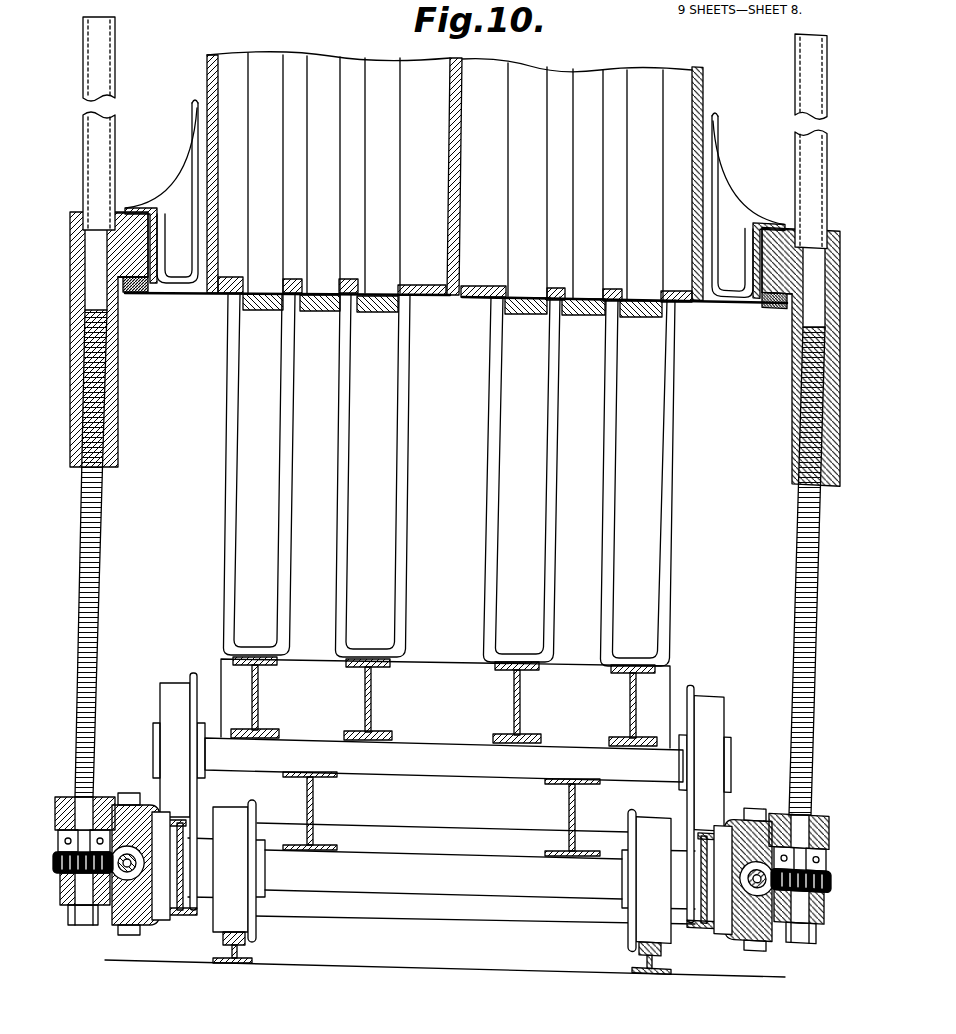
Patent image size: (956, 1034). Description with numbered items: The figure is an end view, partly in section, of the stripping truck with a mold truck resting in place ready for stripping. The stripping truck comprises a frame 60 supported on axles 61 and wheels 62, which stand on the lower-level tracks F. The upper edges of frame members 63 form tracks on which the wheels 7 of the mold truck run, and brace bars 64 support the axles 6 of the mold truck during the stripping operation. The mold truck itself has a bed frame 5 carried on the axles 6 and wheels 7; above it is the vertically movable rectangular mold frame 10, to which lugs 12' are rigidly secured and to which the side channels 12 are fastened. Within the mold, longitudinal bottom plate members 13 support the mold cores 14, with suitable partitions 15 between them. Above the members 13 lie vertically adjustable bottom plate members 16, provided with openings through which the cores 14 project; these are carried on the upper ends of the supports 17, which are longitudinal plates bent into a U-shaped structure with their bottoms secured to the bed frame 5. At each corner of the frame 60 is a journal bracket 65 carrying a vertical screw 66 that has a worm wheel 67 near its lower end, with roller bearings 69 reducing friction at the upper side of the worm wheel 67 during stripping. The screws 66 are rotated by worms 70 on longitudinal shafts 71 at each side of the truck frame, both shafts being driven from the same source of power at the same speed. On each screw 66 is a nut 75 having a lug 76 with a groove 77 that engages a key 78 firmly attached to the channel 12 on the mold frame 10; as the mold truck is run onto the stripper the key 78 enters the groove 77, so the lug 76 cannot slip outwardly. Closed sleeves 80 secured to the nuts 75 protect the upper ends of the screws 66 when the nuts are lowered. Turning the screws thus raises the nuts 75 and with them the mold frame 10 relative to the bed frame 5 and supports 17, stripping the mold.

The bed frame 5 is at (633, 723).
The axles 6 is at (428, 766).
The wheels 7 is at (715, 706).
The mold frame 10 is at (208, 80).
The side channels 12 is at (455, 237).
The lugs 12' is at (455, 199).
The longitudinal bottom plate members 13 is at (630, 319).
The mold cores 14 is at (455, 177).
The partitions 15 is at (458, 184).
The vertically adjustable bottom plate members 16 is at (677, 291).
The supports 17 is at (670, 473).
The frame 60 is at (700, 935).
The axles 61 is at (432, 884).
The wheels 62 is at (650, 920).
The frame members 63 is at (700, 838).
The brace bars 64 is at (571, 814).
The journal bracket 65 is at (750, 925).
The vertical screw 66 is at (802, 553).
The worm wheel 67 is at (828, 900).
The roller bearings 69 is at (755, 875).
The worms 70 is at (755, 925).
The longitudinal shafts 71 is at (730, 835).
The nut 75 is at (785, 402).
The lug 76 is at (775, 240).
The groove 77 is at (767, 294).
The key 78 is at (768, 306).
The closed sleeves 80 is at (820, 72).
The tracks F is at (640, 963).